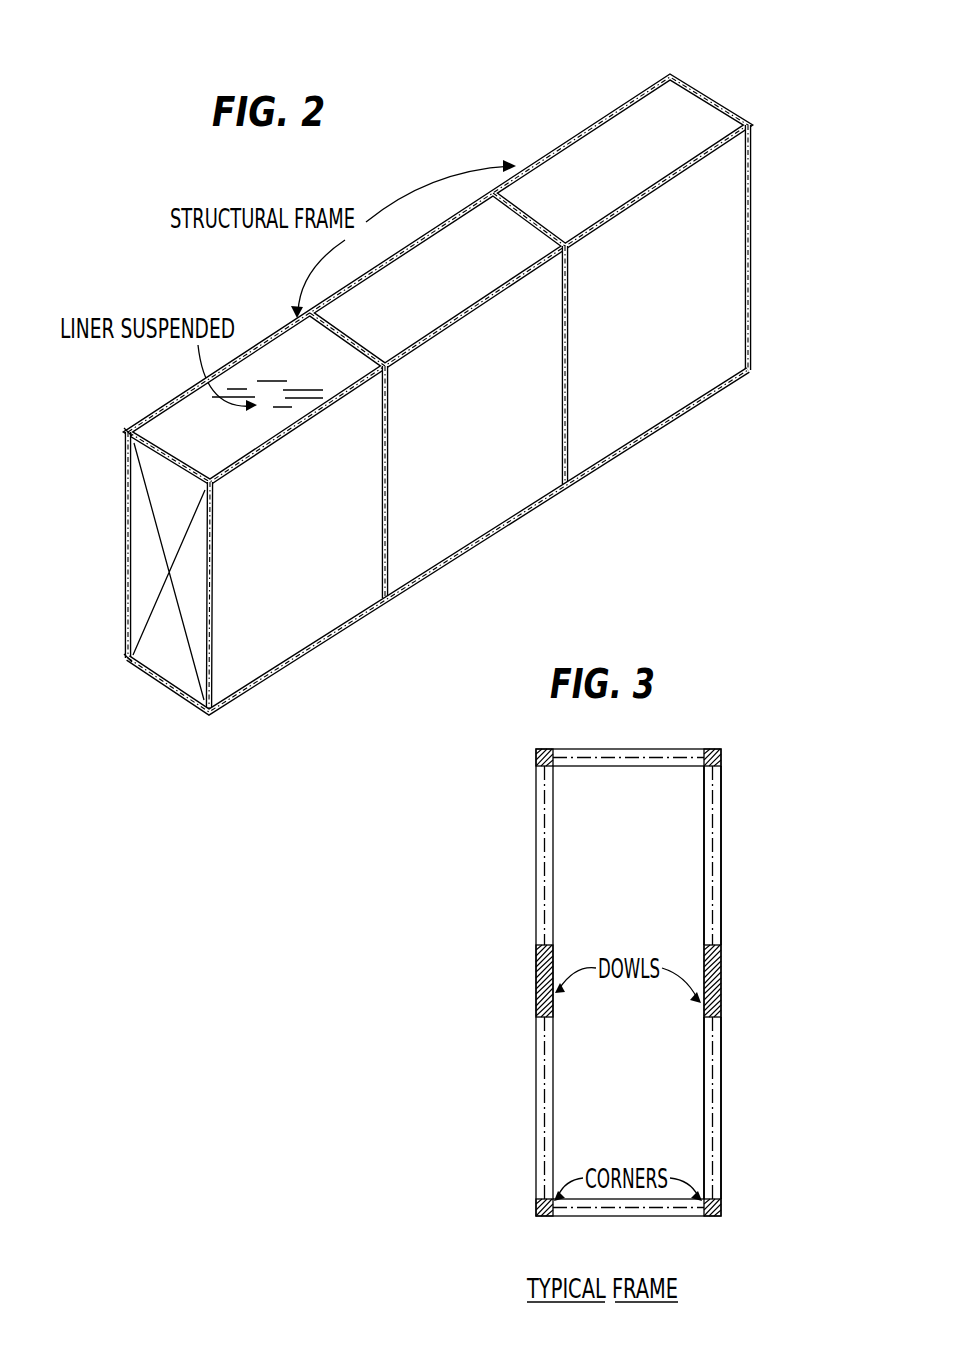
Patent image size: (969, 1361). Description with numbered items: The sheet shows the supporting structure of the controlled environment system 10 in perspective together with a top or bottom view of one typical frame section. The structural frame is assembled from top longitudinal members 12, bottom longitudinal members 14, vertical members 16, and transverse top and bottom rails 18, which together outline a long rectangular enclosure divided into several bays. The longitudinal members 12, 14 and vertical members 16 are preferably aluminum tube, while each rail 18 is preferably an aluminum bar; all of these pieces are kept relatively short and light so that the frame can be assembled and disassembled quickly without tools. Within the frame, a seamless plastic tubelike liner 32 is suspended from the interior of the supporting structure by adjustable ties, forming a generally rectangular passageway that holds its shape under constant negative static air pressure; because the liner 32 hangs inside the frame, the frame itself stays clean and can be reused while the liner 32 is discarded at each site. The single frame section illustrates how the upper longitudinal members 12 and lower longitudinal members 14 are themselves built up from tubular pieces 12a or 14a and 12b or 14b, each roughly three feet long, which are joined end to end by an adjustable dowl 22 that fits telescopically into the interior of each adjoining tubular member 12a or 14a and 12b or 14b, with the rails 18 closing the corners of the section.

In FIG. 2, the controlled environment system 10 is at (649, 44).
In FIG. 2, the top longitudinal members 12 is at (573, 138).
In FIG. 2, the bottom longitudinal members 14 is at (342, 624).
In FIG. 2, the vertical members 16 is at (752, 196).
In FIG. 2, the transverse top and bottom rails 18 is at (124, 459).
In FIG. 3, the transverse top and bottom rails 18 is at (678, 1216).
In FIG. 2, the liner 32 is at (233, 656).
In FIG. 3, the liner 32 is at (630, 897).
In FIG. 3, the adjustable dowl 22 is at (553, 1006).
In FIG. 3, the tubular member 12a is at (723, 922).
In FIG. 3, the tubular member 14a is at (712, 855).
In FIG. 3, the tubular member 12b is at (722, 1085).
In FIG. 3, the tubular member 14b is at (712, 1108).